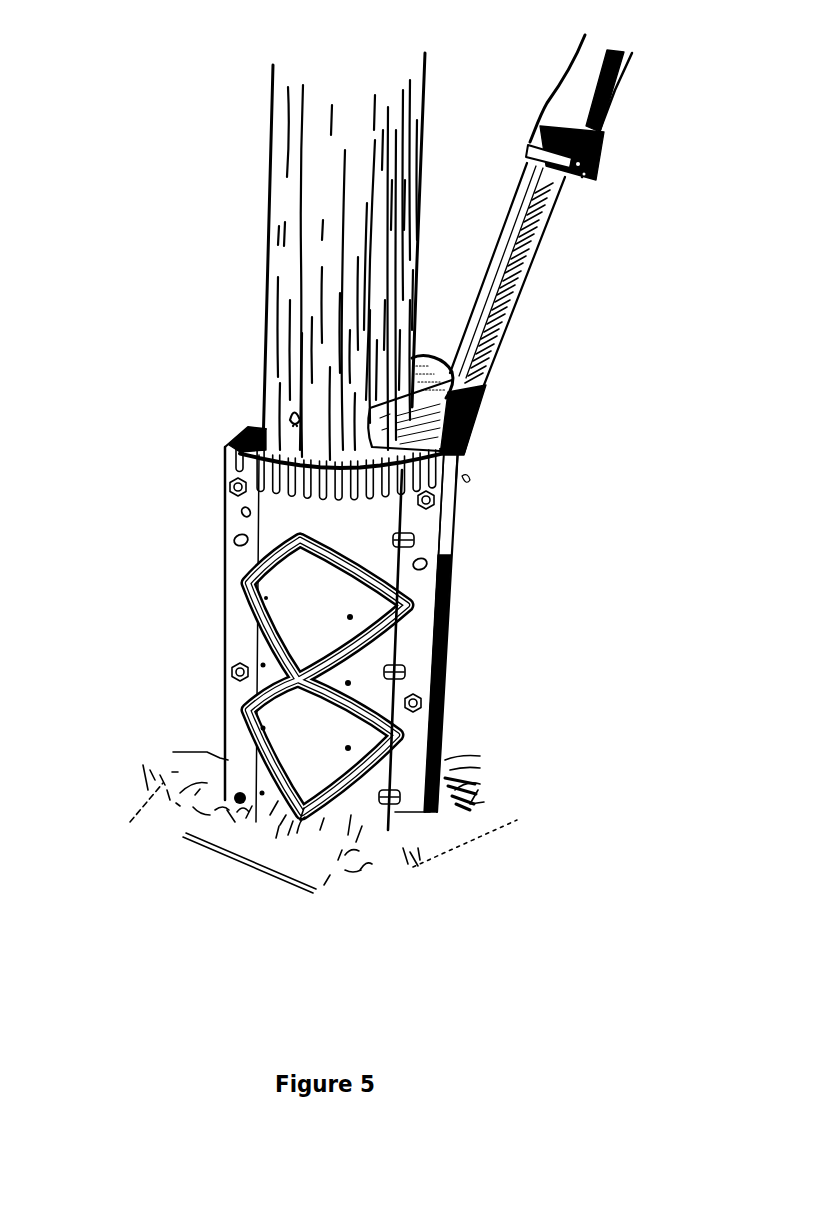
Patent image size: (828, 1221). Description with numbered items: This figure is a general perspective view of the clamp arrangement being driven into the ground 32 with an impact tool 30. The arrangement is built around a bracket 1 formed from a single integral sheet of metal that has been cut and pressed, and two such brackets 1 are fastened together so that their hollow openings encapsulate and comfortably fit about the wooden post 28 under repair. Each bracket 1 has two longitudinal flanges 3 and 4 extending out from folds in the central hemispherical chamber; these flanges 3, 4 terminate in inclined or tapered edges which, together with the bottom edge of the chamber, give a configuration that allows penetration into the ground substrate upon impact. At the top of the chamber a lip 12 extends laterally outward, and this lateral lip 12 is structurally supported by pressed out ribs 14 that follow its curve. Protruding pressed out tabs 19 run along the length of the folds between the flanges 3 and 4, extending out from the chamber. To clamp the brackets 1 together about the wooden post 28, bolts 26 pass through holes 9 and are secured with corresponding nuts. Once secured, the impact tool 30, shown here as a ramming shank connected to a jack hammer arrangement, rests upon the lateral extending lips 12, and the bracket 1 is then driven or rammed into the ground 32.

The bracket 1 is at (458, 523).
The flange 3 is at (423, 645).
The flange 4 is at (236, 607).
The holes 9 is at (233, 543).
The lip 12 is at (238, 444).
The pressed out ribs 14 is at (457, 448).
The protruding pressed out tabs 19 is at (414, 538).
The bolts 26 is at (230, 488).
The wooden post 28 is at (290, 232).
The impact tool 30 is at (540, 250).
The ground 32 is at (317, 865).